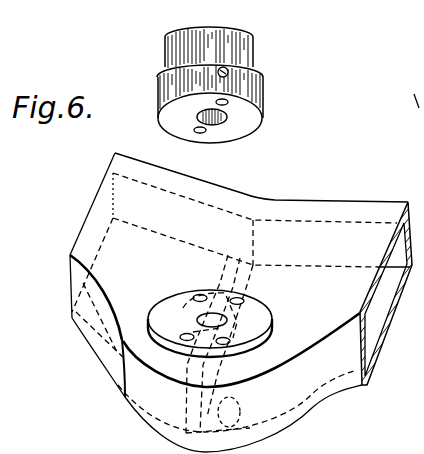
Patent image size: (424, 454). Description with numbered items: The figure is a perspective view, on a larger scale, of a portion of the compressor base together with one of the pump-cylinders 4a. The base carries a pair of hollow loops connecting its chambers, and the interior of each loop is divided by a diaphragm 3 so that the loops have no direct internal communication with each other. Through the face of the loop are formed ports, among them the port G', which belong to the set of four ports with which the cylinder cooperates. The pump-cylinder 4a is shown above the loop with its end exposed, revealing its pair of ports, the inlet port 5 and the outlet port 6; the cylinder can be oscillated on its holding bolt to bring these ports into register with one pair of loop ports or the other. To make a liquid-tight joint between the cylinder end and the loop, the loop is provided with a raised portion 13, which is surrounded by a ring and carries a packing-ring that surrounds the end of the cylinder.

The pump-cylinder 4a is at (252, 50).
The inlet port 5 is at (228, 104).
The outlet port 6 is at (200, 134).
The raised portion 13 is at (264, 316).
The diaphragm 3 is at (229, 412).
The port G' is at (218, 308).